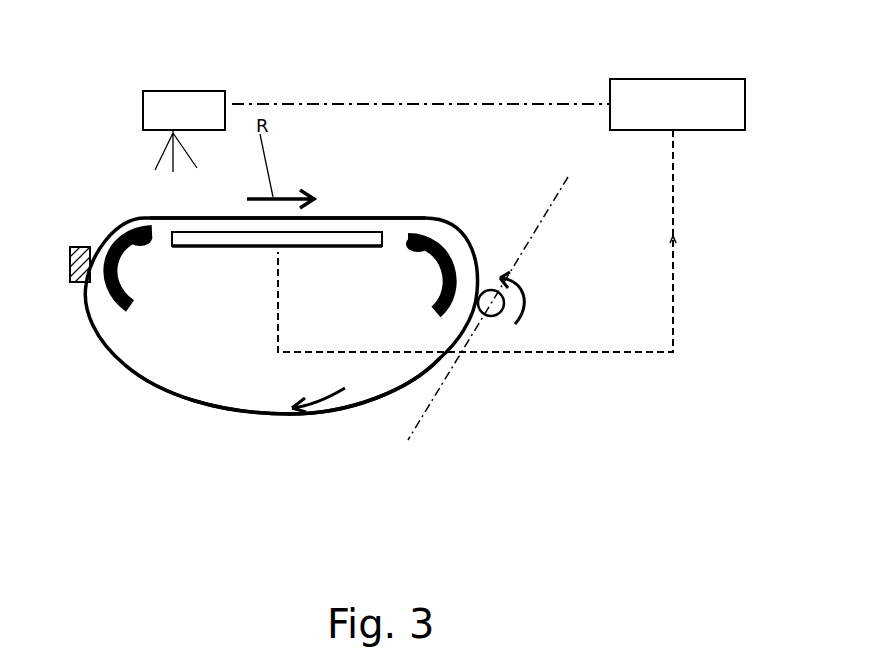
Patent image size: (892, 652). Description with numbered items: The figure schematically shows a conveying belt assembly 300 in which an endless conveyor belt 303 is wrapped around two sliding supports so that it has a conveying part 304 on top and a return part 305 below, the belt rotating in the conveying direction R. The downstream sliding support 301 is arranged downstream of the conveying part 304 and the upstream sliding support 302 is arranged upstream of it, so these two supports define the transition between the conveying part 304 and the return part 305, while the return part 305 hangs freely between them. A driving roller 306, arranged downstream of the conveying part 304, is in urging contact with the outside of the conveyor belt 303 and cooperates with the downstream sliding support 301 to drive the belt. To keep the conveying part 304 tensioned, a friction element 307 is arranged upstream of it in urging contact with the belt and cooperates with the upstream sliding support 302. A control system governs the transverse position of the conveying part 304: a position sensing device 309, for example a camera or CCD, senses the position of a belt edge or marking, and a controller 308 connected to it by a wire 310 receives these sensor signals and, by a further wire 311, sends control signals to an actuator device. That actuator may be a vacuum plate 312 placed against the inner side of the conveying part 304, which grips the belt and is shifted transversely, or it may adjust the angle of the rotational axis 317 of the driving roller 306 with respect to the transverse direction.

The conveying belt assembly 300 is at (472, 450).
The downstream sliding support 301 is at (449, 312).
The upstream sliding support 302 is at (122, 240).
The endless conveyor belt 303 is at (123, 370).
The conveying part 304 is at (358, 218).
The return part 305 is at (210, 410).
The driving roller 306 is at (496, 318).
The friction element 307 is at (72, 247).
The controller 308 is at (653, 95).
The position sensing device 309 is at (185, 105).
The wire 310 is at (397, 104).
The wire 311 is at (597, 353).
The vacuum plate 312 is at (207, 245).
The rotational axis 317 is at (523, 249).